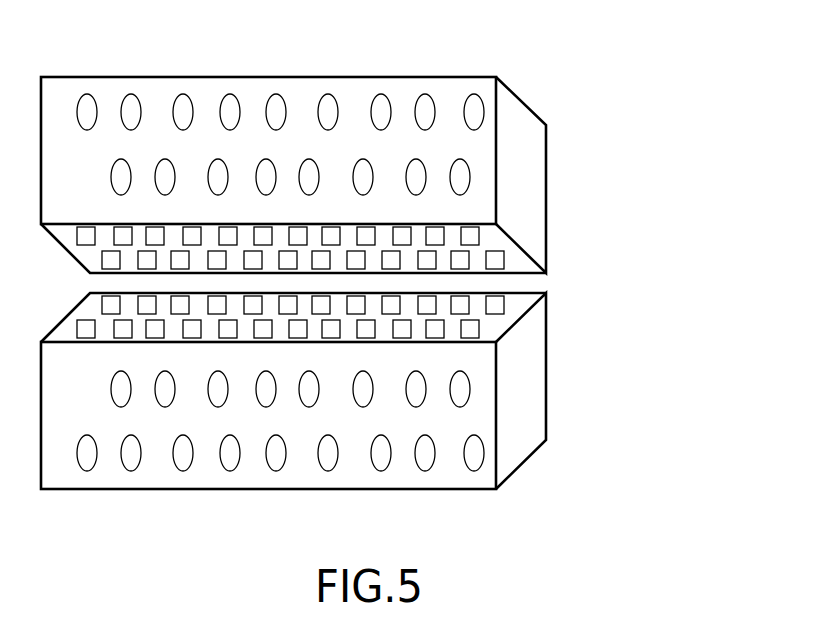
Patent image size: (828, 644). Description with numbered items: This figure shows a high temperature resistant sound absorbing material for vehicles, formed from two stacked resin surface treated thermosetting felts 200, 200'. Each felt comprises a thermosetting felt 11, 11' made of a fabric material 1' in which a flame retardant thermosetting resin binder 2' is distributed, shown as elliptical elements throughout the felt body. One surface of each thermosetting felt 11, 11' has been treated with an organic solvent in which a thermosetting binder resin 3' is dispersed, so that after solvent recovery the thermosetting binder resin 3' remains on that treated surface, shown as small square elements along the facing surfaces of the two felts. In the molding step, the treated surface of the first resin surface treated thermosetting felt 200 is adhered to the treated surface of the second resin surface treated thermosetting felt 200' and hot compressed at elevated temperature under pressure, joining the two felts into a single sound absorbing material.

The fabric material 1' is at (333, 283).
The flame retardant thermosetting resin binder 2' is at (350, 284).
The thermosetting binder resin 3' is at (350, 284).
The thermosetting felt 11 is at (359, 146).
The thermosetting felt 11' is at (364, 420).
The resin surface treated thermosetting felt 200 is at (396, 170).
The resin surface treated thermosetting felt 200' is at (400, 395).